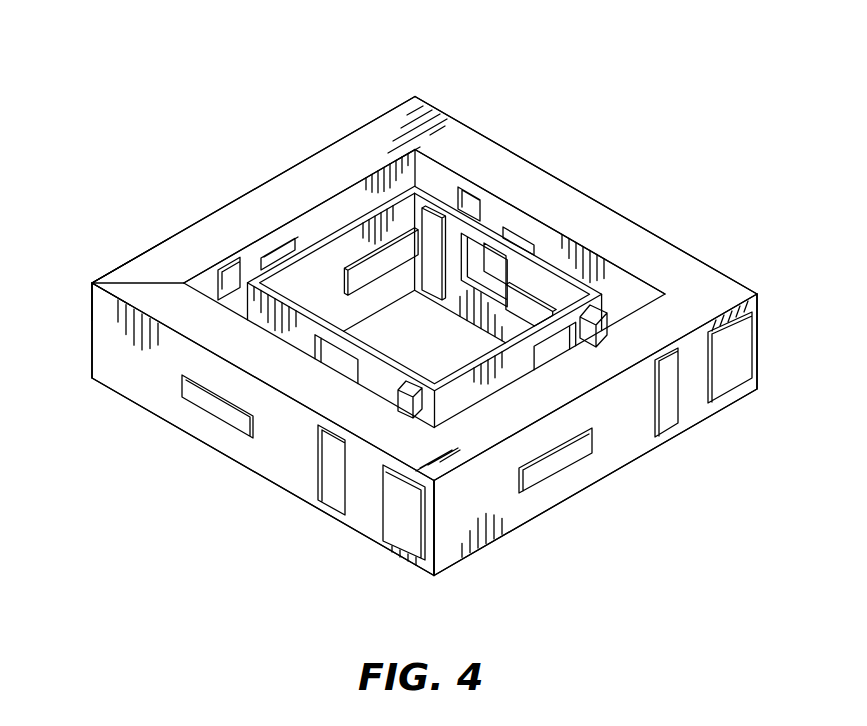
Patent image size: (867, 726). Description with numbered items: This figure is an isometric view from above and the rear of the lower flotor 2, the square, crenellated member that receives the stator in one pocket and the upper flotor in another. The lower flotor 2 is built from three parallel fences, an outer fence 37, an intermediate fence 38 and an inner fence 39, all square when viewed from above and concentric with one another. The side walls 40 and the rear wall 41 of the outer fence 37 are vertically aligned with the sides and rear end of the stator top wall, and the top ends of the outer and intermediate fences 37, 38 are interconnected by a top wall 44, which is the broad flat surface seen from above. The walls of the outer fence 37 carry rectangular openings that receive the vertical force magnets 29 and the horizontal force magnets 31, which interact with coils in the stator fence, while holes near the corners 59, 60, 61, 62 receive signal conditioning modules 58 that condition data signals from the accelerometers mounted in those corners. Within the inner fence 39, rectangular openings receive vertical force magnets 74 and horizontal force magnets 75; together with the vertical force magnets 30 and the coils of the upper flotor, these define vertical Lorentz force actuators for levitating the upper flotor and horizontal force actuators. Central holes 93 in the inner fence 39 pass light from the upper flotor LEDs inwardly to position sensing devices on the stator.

The lower flotor 2 is at (642, 143).
The vertical force magnets 29 is at (330, 501).
The vertical force magnets 30 is at (229, 266).
The horizontal force magnets 31 is at (216, 406).
The outer fence 37 is at (88, 340).
The intermediate fence 38 is at (340, 200).
The inner fence 39 is at (636, 277).
The side walls 40 is at (275, 473).
The rear wall 41 is at (616, 460).
The top wall 44 is at (132, 262).
The signal conditioning modules 58 is at (398, 537).
The corner 59 is at (442, 553).
The corner 60 is at (412, 106).
The corner 61 is at (758, 292).
The corner 62 is at (91, 283).
The vertical force magnets 74 is at (470, 188).
The horizontal force magnets 75 is at (380, 253).
The central holes 93 is at (484, 233).